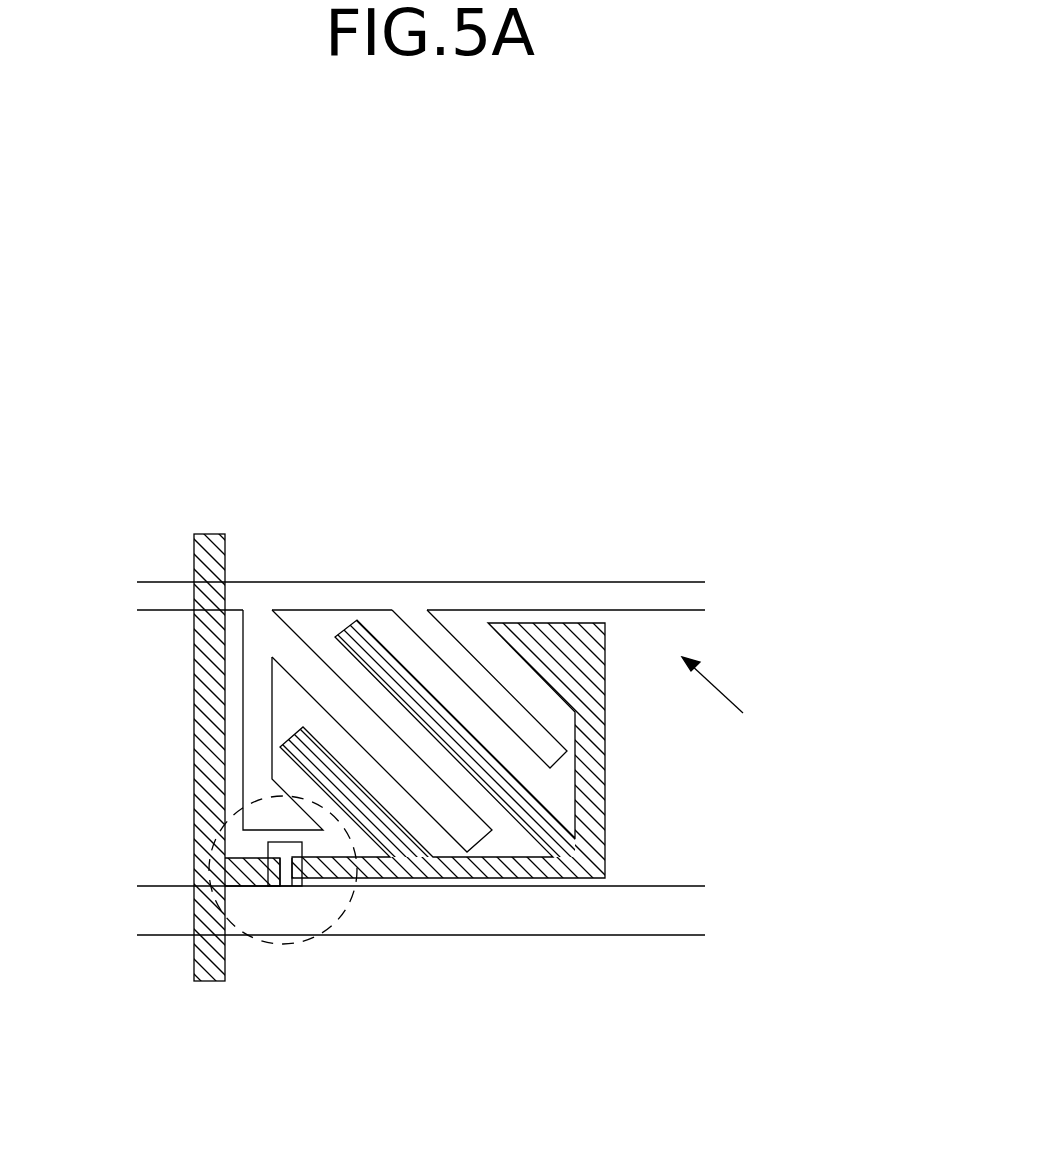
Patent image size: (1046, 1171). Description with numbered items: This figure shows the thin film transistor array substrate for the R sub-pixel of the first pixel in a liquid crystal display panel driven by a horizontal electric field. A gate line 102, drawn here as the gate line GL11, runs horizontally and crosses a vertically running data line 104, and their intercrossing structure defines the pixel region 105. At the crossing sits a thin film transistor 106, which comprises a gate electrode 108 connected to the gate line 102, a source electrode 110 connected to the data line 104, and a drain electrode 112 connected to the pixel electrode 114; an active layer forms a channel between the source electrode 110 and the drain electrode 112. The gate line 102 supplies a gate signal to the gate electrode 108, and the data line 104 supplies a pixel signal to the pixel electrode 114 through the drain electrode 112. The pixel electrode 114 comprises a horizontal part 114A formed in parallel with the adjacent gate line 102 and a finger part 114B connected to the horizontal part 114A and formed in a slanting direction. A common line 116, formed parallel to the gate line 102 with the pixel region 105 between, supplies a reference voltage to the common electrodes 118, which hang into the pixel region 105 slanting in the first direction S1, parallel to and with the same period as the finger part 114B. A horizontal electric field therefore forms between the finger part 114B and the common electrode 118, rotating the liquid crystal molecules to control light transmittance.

The gate line 102 is at (700, 912).
The data line 104 is at (194, 709).
The pixel region 105 is at (333, 738).
The thin film transistor 106 is at (338, 920).
The gate electrode 108 is at (287, 884).
The source electrode 110 is at (228, 868).
The drain electrode 112 is at (297, 878).
The pixel electrode 114 is at (526, 755).
The horizontal part 114A is at (605, 852).
The finger part 114B is at (493, 761).
The common line 116 is at (358, 585).
The common electrode 118 is at (257, 610).
The gate line GL11 is at (140, 911).
The first direction S1 is at (698, 688).